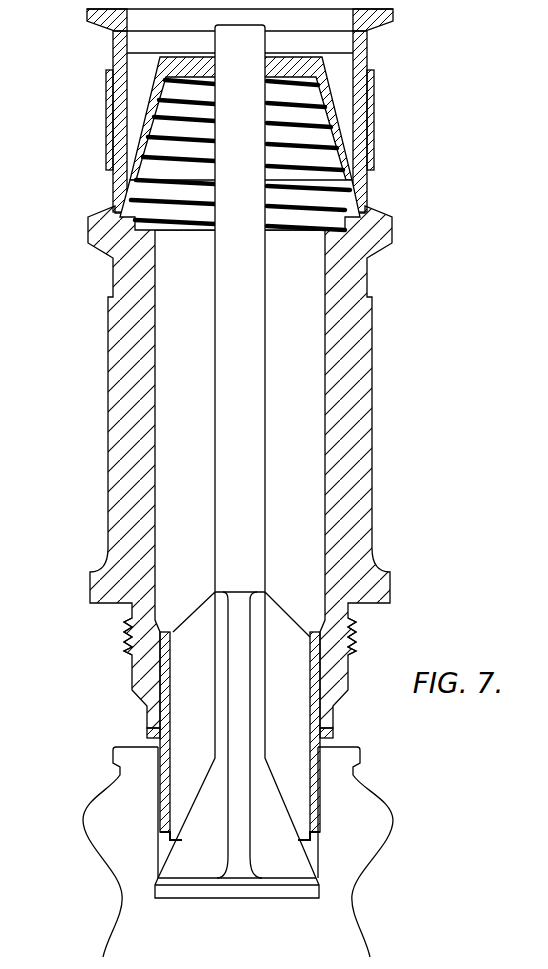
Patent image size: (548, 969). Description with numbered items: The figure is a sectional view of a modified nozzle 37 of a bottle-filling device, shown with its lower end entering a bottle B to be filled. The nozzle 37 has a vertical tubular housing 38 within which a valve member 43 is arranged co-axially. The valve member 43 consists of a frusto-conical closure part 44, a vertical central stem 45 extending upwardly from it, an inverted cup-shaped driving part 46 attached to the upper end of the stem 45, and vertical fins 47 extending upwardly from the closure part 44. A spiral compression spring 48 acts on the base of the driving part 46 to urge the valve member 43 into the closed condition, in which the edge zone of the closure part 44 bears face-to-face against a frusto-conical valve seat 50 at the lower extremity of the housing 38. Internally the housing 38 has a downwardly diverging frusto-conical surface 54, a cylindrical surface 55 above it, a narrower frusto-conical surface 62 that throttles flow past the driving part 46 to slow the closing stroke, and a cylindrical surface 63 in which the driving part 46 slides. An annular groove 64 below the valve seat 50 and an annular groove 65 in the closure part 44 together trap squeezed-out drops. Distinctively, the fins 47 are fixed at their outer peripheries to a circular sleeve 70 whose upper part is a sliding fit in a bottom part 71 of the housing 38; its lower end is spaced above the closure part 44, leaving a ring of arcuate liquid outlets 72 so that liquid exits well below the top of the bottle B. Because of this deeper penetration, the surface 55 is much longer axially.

The nozzle 37 is at (242, 477).
The vertical tubular housing 38 is at (353, 330).
The valve member 43 is at (213, 407).
The frusto-conical closure part 44 is at (287, 870).
The vertical central stem 45 is at (253, 428).
The driving part 46 is at (320, 68).
The vertical fins 47 is at (350, 648).
The spiral compression spring 48 is at (318, 128).
The frusto-conical valve seat 50 is at (317, 740).
The frusto-conical internal surface 54 is at (125, 187).
The cylindrical internal surface 55 is at (110, 112).
The frusto-conical internal surface 62 is at (117, 43).
The circular cylindrical internal surface 63 is at (105, 14).
The annular groove 64 is at (160, 728).
The annular groove 65 is at (165, 900).
The circular sleeve 70 is at (163, 672).
The bottom part of the housing 71 is at (140, 650).
The arcuate liquid outlets 72 is at (158, 848).
The bottle B is at (388, 803).